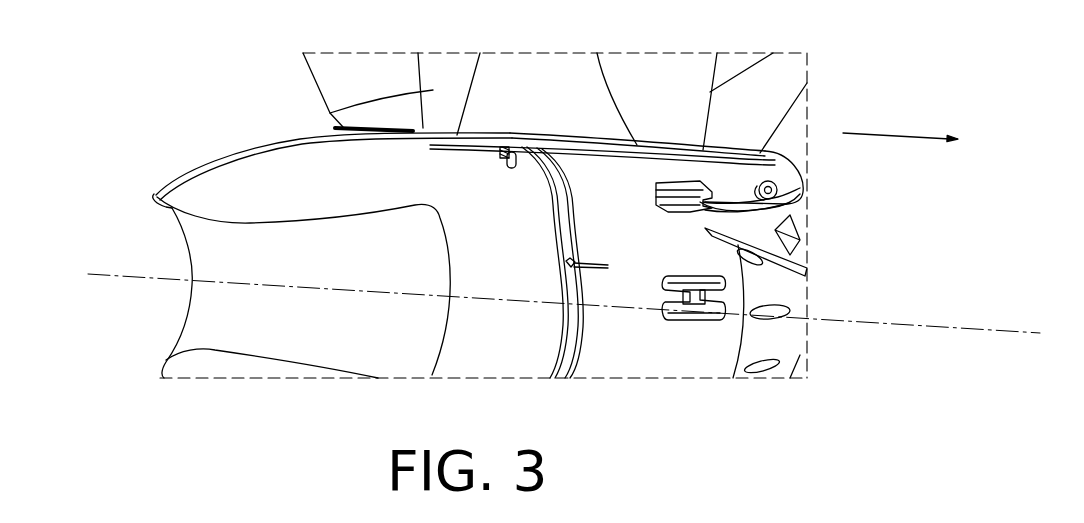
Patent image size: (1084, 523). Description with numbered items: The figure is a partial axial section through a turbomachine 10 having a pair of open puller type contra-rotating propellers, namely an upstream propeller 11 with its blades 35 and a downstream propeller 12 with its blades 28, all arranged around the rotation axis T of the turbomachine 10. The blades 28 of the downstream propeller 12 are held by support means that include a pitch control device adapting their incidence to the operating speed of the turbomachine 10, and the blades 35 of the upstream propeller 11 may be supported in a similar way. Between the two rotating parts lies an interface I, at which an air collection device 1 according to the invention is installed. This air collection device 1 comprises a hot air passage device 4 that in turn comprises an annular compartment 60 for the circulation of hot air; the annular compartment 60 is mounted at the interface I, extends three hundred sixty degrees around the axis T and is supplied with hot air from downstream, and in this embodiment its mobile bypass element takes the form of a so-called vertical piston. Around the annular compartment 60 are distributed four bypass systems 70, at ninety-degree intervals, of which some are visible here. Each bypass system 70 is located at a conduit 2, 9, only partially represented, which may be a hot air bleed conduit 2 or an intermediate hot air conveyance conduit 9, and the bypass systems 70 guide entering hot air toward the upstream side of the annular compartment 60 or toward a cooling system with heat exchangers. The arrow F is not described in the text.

The air collection device 1 is at (566, 283).
The hot air bleed conduit 2 is at (525, 208).
The hot air intermediate circulation or conveyance conduit 9 is at (525, 208).
The hot air passage device 4 is at (590, 240).
The turbomachine 10 is at (184, 142).
The upstream propeller 11 is at (333, 86).
The downstream propeller 12 is at (767, 80).
The blades of the downstream propeller 28 is at (626, 85).
The blades of the upstream propeller 35 is at (330, 113).
The annular compartment 60 is at (579, 183).
The bypass system 70 is at (490, 159).
The rotation axis of the turbomachine T is at (113, 278).
The flow direction F is at (902, 134).
The interface I is at (513, 132).